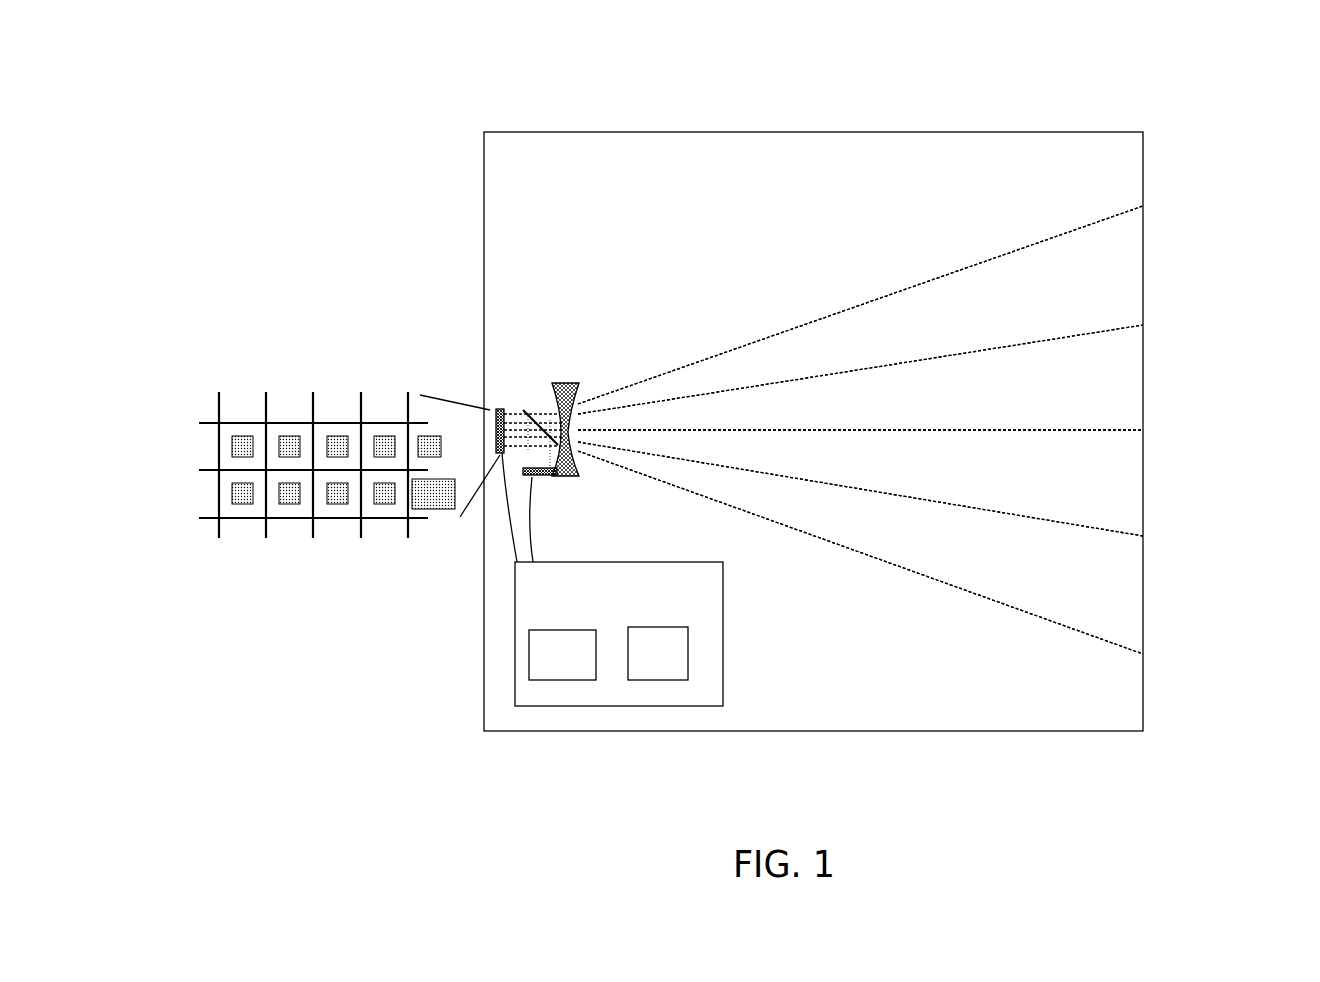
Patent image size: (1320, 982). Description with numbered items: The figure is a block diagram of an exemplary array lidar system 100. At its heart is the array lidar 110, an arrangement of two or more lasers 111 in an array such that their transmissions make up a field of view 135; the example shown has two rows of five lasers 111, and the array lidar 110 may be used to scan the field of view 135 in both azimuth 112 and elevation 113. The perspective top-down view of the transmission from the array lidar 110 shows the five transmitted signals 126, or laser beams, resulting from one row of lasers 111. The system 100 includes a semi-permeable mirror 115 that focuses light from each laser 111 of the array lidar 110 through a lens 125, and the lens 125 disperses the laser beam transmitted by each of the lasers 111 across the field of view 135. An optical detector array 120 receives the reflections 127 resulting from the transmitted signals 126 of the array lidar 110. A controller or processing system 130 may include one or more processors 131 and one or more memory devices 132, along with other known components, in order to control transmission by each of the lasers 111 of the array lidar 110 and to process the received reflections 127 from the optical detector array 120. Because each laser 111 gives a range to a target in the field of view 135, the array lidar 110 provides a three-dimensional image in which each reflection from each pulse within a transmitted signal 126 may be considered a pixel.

The array lidar system 100 is at (1128, 96).
The array lidar 110 is at (491, 395).
The lasers 111 is at (287, 433).
The azimuth 112 is at (406, 567).
The elevation 113 is at (195, 426).
The semi-permeable mirror 115 is at (539, 399).
The optical detector array 120 is at (550, 487).
The lens 125 is at (608, 371).
The transmitted signals 126 is at (863, 288).
The reflections 127 is at (860, 430).
The controller or processing system 130 is at (712, 604).
The processors 131 is at (580, 667).
The memory devices 132 is at (678, 667).
The field of view 135 is at (1152, 203).